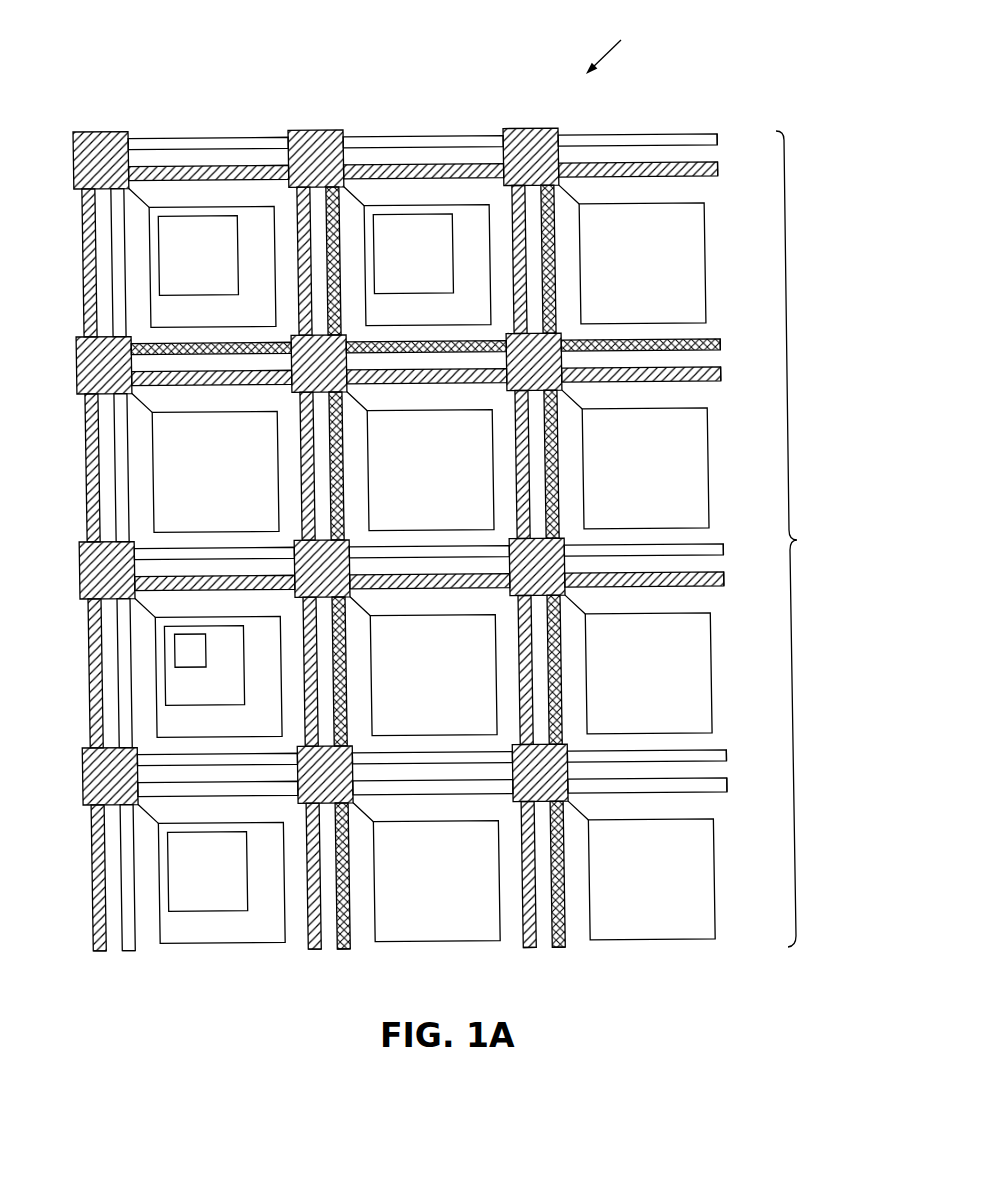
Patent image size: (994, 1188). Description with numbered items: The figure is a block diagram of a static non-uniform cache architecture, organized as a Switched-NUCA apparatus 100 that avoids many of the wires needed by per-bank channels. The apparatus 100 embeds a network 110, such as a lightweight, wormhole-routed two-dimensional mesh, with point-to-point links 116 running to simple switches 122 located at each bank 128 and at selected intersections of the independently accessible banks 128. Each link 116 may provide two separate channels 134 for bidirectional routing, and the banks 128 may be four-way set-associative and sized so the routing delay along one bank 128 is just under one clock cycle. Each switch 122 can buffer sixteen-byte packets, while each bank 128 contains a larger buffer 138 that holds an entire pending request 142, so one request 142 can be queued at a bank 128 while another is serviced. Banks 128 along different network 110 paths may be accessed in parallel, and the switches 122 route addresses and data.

The apparatus 100 is at (616, 43).
The network 110 is at (797, 540).
The point-to-point links 116 is at (206, 138).
The switches 122 is at (105, 131).
The banks 128 is at (210, 207).
The channels 134 is at (718, 139).
The buffer 138 is at (199, 295).
The pending request 142 is at (186, 668).